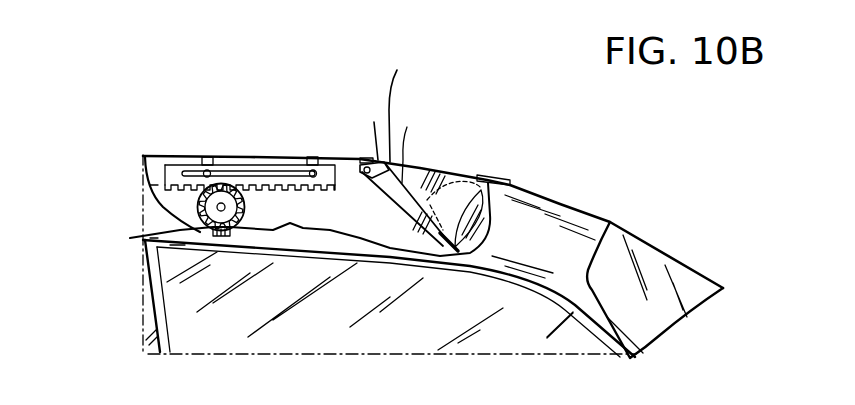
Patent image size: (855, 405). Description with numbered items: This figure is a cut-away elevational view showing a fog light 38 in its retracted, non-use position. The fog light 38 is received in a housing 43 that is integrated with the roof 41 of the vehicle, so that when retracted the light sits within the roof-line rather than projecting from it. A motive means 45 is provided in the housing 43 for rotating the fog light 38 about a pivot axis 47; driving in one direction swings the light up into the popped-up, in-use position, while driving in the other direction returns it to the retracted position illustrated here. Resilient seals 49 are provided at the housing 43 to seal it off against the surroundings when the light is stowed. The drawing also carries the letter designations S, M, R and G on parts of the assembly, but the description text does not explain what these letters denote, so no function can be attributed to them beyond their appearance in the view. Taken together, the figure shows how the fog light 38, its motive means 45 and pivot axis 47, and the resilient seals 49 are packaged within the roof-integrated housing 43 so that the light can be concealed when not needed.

The fog light 38 is at (433, 163).
The roof 41 is at (553, 193).
The housing 43 is at (399, 144).
The motive means 45 is at (253, 160).
The pivot axis 47 is at (392, 102).
The resilient seals 49 is at (377, 157).
The sensor switch S is at (209, 157).
The motor gear M is at (245, 212).
The rod R is at (330, 185).
The glass G is at (148, 228).